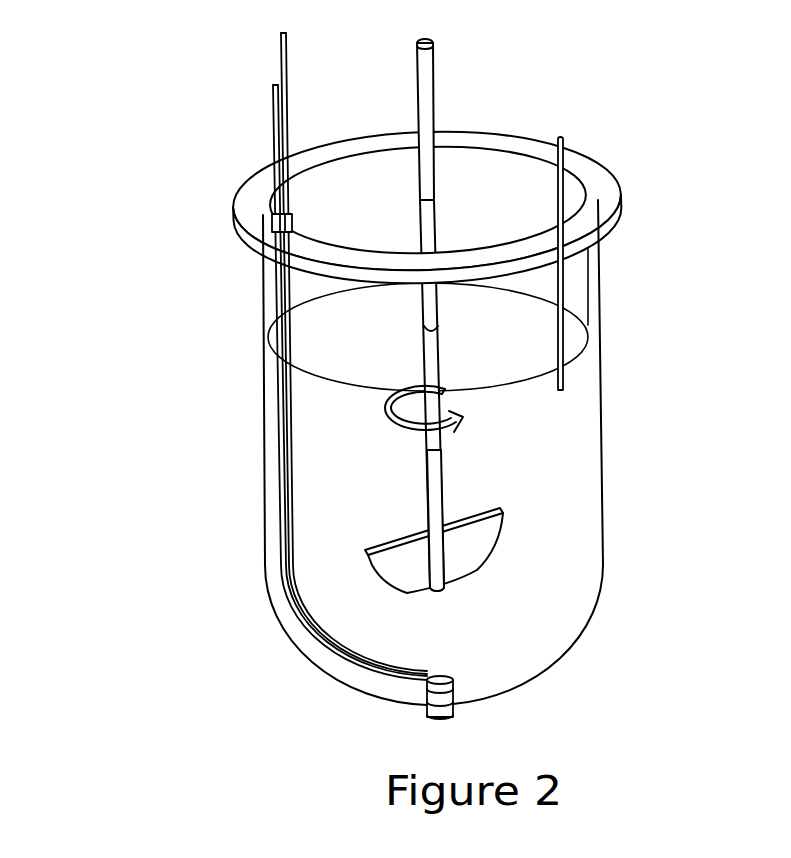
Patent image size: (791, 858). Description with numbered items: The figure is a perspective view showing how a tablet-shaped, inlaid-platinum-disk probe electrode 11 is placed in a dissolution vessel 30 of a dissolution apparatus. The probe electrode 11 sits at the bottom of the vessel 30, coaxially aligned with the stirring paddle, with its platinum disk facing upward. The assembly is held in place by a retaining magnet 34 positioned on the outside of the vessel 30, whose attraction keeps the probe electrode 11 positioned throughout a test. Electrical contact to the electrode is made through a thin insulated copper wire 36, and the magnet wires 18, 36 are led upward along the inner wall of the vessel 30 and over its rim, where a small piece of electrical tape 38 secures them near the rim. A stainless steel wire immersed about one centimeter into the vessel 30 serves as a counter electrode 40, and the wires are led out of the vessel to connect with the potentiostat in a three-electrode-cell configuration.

The inlaid-platinum-disk probe electrode 11 is at (453, 678).
The magnet wire 18 is at (284, 67).
The dissolution vessel 30 is at (175, 421).
The retaining magnet 34 is at (440, 717).
The insulated copper wire 36 is at (275, 103).
The electrical tape 38 is at (270, 215).
The counter electrode 40 is at (563, 142).